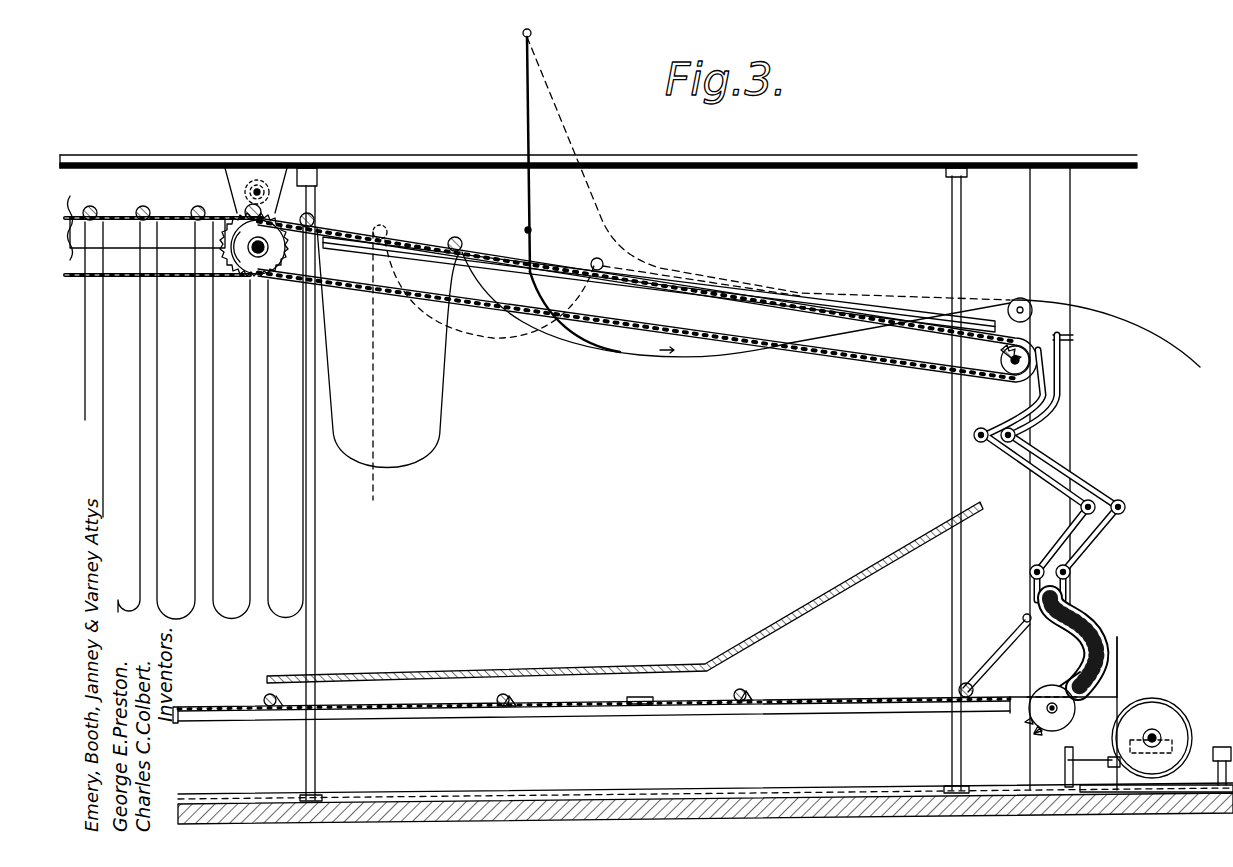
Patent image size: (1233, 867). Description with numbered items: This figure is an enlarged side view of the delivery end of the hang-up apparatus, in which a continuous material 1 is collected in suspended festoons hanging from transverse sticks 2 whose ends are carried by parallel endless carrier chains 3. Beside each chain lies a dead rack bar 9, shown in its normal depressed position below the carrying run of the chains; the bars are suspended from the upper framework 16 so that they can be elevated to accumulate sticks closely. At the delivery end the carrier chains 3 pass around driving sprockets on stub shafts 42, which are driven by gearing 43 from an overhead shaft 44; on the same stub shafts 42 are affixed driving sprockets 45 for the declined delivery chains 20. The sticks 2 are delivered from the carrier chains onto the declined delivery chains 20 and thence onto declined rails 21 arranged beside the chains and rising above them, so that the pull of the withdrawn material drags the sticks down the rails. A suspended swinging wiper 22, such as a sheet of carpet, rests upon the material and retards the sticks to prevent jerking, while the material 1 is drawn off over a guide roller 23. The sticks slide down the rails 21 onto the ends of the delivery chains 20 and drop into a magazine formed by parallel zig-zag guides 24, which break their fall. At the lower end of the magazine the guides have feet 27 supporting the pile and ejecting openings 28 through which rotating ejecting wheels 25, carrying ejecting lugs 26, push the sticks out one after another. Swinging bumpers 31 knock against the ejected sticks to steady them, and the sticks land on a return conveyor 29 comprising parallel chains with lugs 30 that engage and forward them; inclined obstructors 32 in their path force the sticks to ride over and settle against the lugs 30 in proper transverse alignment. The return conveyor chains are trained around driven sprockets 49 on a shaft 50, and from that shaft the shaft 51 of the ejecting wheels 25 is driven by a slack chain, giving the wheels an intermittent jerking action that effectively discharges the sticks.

The continuous material 1 is at (440, 403).
The sticks 2 is at (194, 211).
The carrier chains 3 is at (72, 216).
The dead rack bars 9 is at (123, 242).
The upper framework 16 is at (838, 158).
The declined delivery chains 20 is at (855, 322).
The declined rails 21 is at (906, 322).
The swinging wiper 22 is at (533, 252).
The guide roller 23 is at (1032, 308).
The magazine guides 24 is at (1090, 498).
The ejecting wheels 25 is at (1043, 722).
The ejecting lugs 26 is at (1038, 728).
The feet 27 is at (1056, 684).
The ejecting openings 28 is at (1068, 664).
The return conveyor 29 is at (931, 700).
The lugs 30 is at (517, 701).
The swinging bumpers 31 is at (985, 665).
The inclined obstructors 32 is at (660, 697).
The stub shafts 42 is at (256, 258).
The gearing 43 is at (259, 180).
The overhead shaft 44 is at (257, 210).
The driving sprockets 45 is at (275, 260).
The driven sprockets 49 is at (1162, 718).
The shaft 50 is at (1161, 738).
The shaft of ejecting wheels 51 is at (1049, 710).